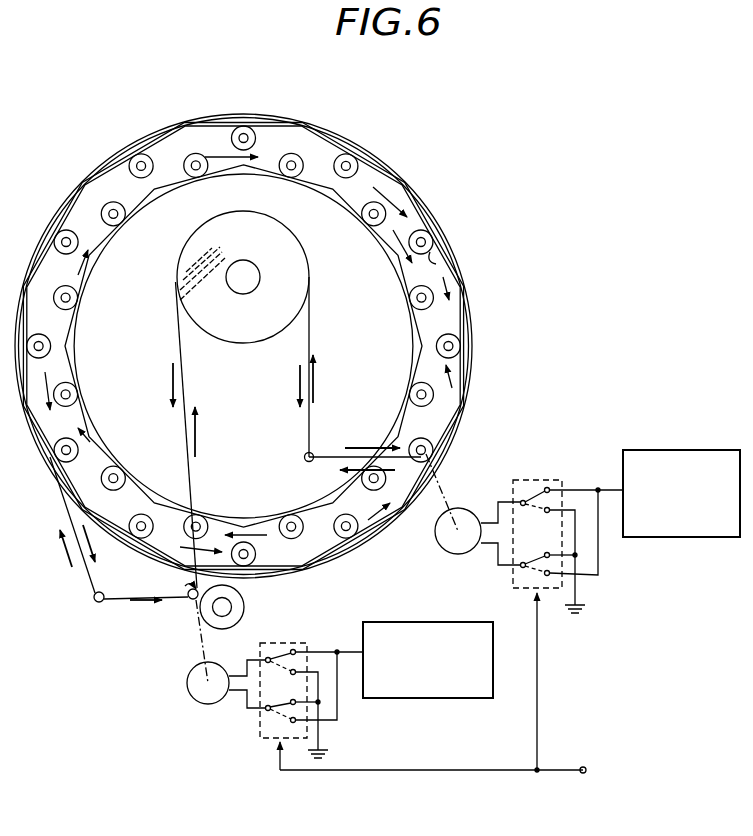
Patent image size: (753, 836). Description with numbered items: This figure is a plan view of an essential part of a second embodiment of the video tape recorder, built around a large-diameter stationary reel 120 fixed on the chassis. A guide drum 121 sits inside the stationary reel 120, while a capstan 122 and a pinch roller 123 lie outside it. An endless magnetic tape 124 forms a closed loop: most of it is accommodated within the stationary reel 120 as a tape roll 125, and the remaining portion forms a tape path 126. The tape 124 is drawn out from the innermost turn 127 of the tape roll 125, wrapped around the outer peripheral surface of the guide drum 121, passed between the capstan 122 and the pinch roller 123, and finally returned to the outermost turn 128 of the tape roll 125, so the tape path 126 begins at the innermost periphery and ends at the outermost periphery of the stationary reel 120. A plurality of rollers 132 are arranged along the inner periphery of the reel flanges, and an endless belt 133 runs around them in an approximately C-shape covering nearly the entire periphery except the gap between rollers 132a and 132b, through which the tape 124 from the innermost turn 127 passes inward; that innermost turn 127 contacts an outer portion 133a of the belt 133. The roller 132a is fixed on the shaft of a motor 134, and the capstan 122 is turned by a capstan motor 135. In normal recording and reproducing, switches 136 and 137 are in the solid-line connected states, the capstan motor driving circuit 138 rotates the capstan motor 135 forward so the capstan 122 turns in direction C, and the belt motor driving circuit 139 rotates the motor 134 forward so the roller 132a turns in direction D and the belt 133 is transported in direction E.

The stationary reel 120 is at (470, 268).
The guide drum 121 is at (305, 270).
The capstan 122 is at (188, 600).
The pinch roller 123 is at (245, 607).
The endless magnetic tape 124 is at (363, 436).
The tape roll 125 is at (463, 310).
The tape path 126 is at (310, 312).
The innermost turn 127 is at (463, 368).
The outermost turn 128 is at (93, 188).
The rollers 132 is at (417, 222).
The roller 132a is at (440, 440).
The roller 132b is at (392, 512).
The endless belt 133 is at (318, 163).
The outer portion of the belt 133a is at (437, 257).
The motor 134 is at (458, 555).
The capstan motor 135 is at (204, 705).
The switch 136 is at (266, 745).
The switch 137 is at (553, 480).
The capstan motor driving circuit 138 is at (437, 698).
The belt motor driving circuit 139 is at (668, 537).